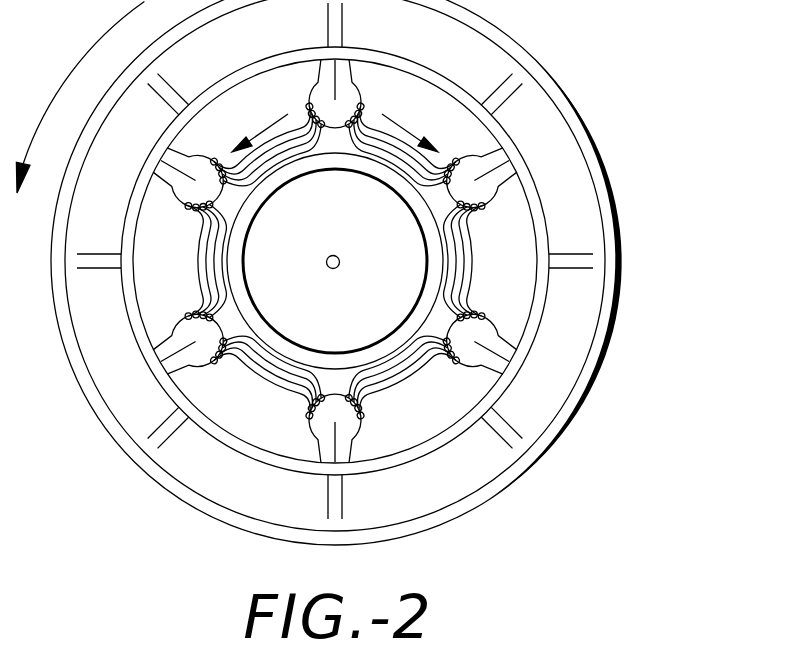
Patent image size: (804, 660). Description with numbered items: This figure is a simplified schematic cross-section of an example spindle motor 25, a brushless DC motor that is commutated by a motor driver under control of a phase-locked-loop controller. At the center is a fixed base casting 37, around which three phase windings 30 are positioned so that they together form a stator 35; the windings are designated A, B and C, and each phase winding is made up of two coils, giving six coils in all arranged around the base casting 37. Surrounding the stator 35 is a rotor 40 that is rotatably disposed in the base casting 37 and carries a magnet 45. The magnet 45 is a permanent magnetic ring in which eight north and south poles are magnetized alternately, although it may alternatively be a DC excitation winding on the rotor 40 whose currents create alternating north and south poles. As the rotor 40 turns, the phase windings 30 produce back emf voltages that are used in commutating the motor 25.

The spindle motor 25 is at (597, 487).
The phase windings 30 is at (342, 264).
The stator 35 is at (465, 390).
The base casting 37 is at (325, 323).
The rotor 40 is at (630, 270).
The magnet 45 is at (548, 134).